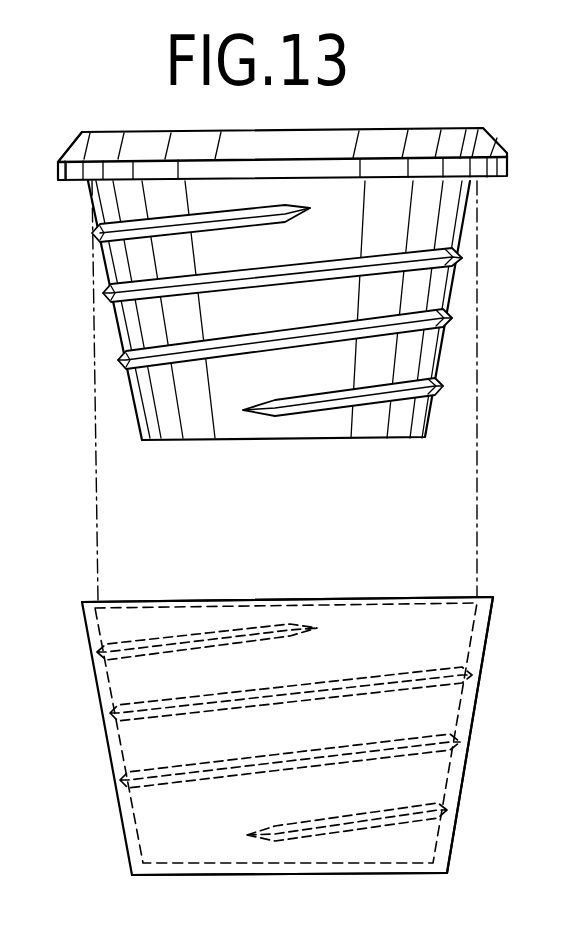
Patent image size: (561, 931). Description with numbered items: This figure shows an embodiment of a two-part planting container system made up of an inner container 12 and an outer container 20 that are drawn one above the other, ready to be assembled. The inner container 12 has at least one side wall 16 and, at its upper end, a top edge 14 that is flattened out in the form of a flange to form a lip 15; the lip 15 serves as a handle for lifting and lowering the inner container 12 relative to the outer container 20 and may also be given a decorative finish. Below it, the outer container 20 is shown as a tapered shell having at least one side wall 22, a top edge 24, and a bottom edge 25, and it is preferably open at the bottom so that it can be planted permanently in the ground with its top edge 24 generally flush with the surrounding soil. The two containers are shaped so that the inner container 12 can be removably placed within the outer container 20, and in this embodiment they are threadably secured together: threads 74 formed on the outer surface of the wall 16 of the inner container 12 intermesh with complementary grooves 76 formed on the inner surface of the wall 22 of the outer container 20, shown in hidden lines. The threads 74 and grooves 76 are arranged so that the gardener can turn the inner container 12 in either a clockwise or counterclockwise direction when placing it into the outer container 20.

The inner container 12 is at (132, 392).
The top edge 14 is at (66, 151).
The lip 15 is at (58, 173).
The side wall 16 is at (452, 320).
The outer container 20 is at (314, 718).
The side wall 22 is at (460, 817).
The top edge 24 is at (417, 596).
The bottom edge 25 is at (438, 877).
The threads 74 is at (282, 310).
The complementary grooves 76 is at (150, 632).